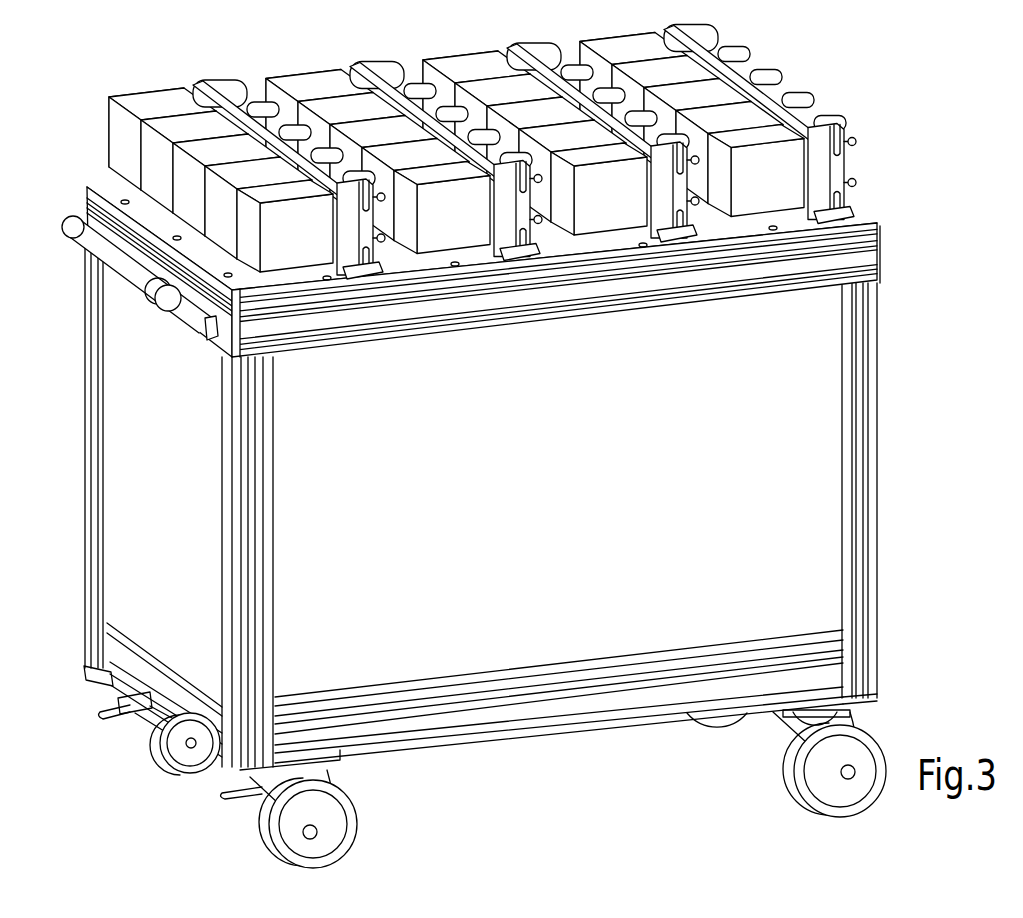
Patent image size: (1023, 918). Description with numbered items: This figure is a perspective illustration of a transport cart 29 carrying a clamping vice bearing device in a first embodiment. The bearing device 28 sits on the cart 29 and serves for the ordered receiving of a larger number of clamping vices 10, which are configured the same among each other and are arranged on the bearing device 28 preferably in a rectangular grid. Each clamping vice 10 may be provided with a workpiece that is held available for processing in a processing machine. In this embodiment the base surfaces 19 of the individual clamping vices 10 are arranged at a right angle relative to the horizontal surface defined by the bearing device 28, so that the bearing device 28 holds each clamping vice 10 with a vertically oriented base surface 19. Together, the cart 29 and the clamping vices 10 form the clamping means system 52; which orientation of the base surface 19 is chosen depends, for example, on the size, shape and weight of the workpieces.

The clamping vice 10 is at (807, 70).
The base surface 19 is at (850, 170).
The bearing device 28 is at (873, 217).
The cart 29 is at (893, 381).
The clamping means system 52 is at (559, 152).